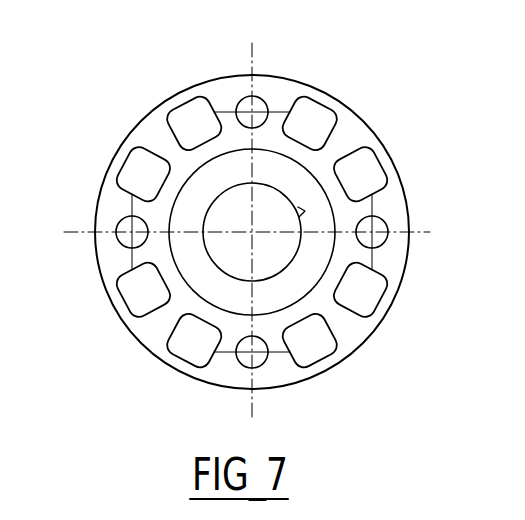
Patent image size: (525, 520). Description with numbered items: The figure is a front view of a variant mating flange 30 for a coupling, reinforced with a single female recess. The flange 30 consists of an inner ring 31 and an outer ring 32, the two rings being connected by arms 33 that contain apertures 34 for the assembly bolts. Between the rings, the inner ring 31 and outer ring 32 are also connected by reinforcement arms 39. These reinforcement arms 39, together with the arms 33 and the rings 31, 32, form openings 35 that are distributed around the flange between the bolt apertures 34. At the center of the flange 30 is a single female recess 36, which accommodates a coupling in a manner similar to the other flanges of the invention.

The variant flange 30 is at (408, 155).
The inner ring 31 is at (326, 212).
The outer ring 32 is at (395, 188).
The arms 33 is at (393, 264).
The apertures 34 is at (248, 97).
The openings 35 is at (197, 118).
The female recess 36 is at (263, 160).
The reinforcement arms 39 is at (155, 135).